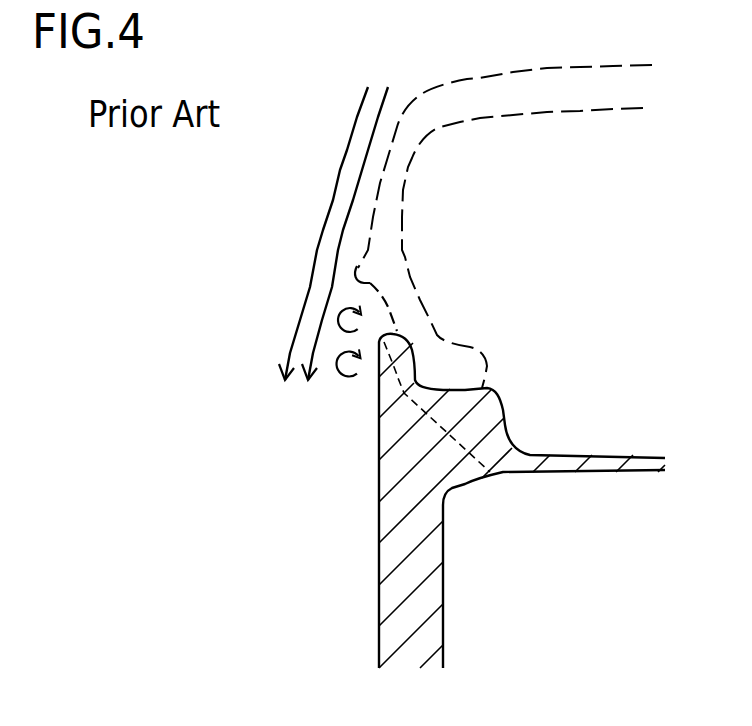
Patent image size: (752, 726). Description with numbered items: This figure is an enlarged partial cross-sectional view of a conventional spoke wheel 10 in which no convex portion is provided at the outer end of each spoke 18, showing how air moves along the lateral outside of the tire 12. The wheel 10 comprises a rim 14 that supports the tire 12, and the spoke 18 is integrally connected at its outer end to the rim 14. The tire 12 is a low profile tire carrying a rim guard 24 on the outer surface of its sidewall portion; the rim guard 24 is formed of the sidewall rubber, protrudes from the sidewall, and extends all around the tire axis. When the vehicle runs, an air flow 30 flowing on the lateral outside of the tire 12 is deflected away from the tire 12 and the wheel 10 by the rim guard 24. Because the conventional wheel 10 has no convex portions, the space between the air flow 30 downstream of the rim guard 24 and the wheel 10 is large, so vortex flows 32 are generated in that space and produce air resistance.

The spoke wheel 10 is at (512, 372).
The tire 12 is at (538, 113).
The rim 14 is at (623, 473).
The spoke 18 is at (445, 582).
The rim guard 24 is at (352, 273).
The air flow 30 is at (338, 168).
The vortex flow 32 is at (343, 376).